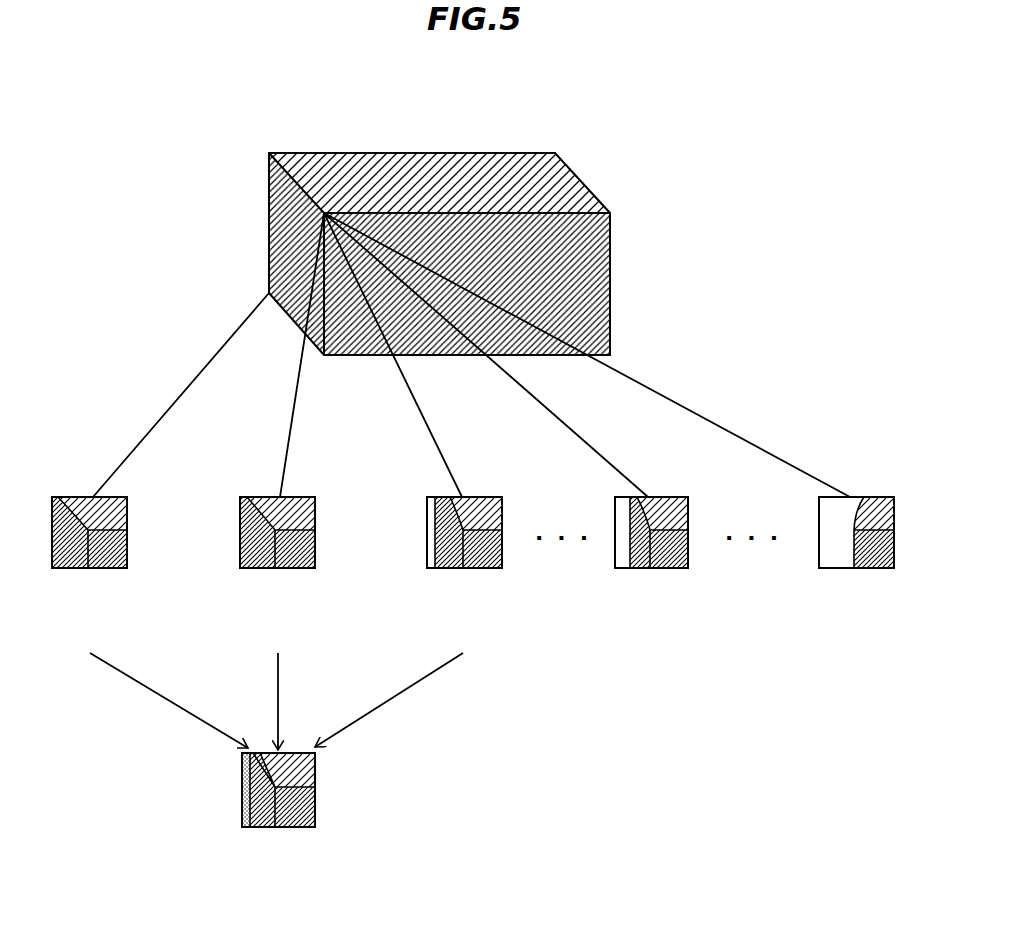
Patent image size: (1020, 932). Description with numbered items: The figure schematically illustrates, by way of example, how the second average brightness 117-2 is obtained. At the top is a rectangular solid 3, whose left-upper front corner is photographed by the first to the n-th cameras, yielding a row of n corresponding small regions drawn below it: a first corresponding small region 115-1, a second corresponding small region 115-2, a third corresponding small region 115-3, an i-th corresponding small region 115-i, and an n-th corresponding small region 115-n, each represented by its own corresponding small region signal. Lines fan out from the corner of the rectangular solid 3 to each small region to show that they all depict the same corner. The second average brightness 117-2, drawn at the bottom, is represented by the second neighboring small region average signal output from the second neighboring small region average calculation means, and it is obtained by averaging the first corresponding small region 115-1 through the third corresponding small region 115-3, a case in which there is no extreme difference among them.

The rectangular solid 3 is at (610, 270).
The first corresponding small region 115-1 is at (72, 493).
The second corresponding small region 115-2 is at (300, 495).
The third corresponding small region 115-3 is at (482, 495).
The i-th corresponding small region 115-i is at (657, 495).
The n-th corresponding small region 115-n is at (860, 495).
The second average brightness 117-2 is at (293, 832).